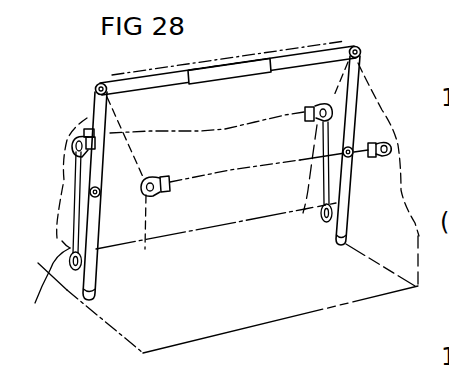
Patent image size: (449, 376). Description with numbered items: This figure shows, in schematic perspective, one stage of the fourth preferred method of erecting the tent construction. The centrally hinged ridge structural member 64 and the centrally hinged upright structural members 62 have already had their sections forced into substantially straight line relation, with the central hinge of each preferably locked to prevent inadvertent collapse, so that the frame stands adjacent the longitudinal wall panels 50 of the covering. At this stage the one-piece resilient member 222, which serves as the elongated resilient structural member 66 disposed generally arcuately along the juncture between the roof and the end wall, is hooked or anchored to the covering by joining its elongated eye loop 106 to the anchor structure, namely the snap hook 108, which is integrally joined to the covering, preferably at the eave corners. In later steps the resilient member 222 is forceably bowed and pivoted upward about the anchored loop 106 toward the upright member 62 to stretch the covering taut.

The longitudinal wall panel 50 is at (205, 163).
The upright structural member 62 is at (111, 207).
The ridge structural member 64 is at (213, 87).
The resilient structural member 66 is at (75, 187).
The eye loop 106 is at (72, 140).
The snap hook 108 is at (84, 130).
The one-piece resilient member 222 is at (226, 200).